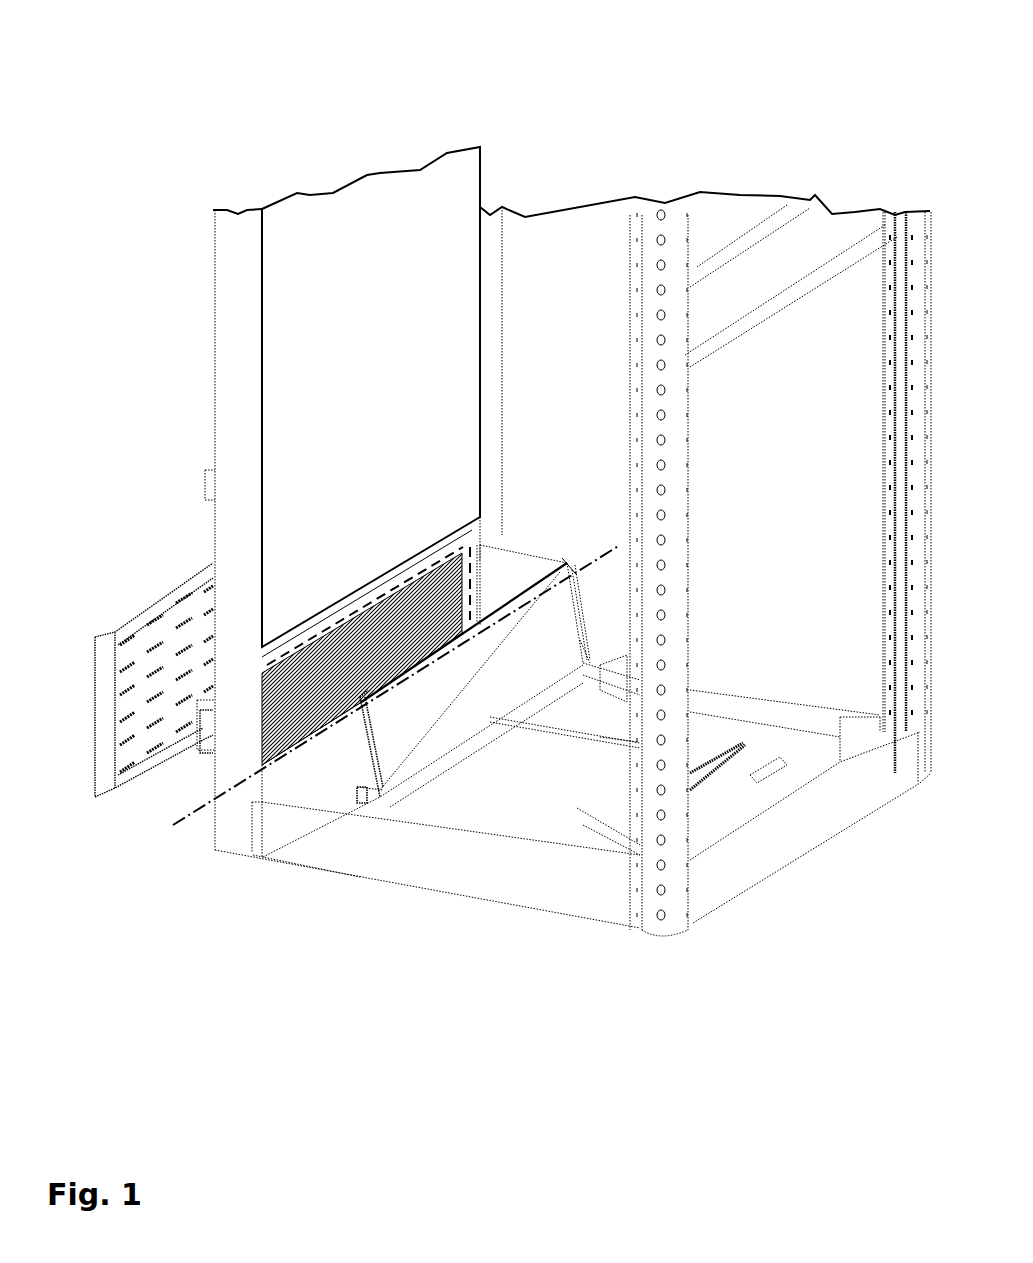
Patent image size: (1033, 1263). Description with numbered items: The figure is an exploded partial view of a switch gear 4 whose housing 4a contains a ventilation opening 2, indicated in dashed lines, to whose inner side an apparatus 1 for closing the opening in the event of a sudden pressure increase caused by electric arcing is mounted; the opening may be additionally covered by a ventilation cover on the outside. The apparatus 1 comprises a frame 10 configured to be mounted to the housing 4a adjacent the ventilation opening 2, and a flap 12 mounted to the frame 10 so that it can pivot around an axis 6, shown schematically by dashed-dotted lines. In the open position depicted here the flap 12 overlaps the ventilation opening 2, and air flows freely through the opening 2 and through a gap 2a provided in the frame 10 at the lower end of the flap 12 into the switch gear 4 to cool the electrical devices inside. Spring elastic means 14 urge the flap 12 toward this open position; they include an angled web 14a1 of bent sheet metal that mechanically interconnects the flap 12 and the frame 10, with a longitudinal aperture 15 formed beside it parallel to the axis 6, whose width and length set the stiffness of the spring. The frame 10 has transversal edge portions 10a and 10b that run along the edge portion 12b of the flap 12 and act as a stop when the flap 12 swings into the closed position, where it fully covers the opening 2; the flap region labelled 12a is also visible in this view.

The apparatus 1 is at (537, 545).
The ventilation opening 2 is at (412, 572).
The gap 2a is at (373, 781).
The switch gear 4 is at (571, 203).
The housing 4a is at (371, 402).
The axis 6 is at (195, 812).
The frame 10 is at (505, 600).
The transversal edge portion of the frame 10a is at (368, 735).
The transversal edge portion of the frame 10b is at (393, 677).
The flap 12 is at (410, 718).
The tray end wall 12a is at (577, 647).
The edge portion of the flap 12b is at (497, 708).
The spring elastic means 14 is at (522, 602).
The angled web 14a1 is at (575, 573).
The longitudinal aperture 15 is at (468, 605).